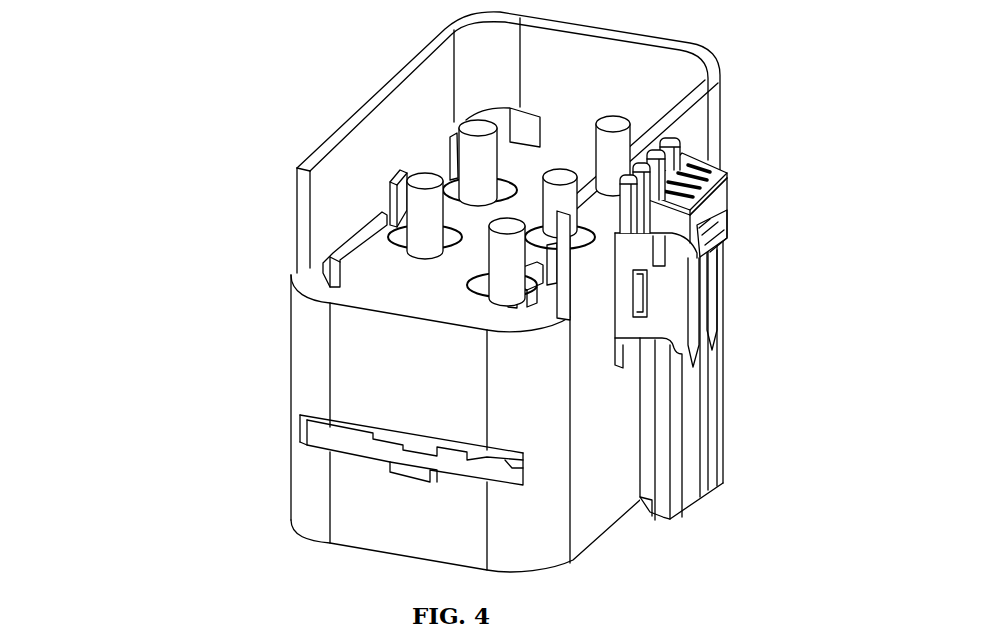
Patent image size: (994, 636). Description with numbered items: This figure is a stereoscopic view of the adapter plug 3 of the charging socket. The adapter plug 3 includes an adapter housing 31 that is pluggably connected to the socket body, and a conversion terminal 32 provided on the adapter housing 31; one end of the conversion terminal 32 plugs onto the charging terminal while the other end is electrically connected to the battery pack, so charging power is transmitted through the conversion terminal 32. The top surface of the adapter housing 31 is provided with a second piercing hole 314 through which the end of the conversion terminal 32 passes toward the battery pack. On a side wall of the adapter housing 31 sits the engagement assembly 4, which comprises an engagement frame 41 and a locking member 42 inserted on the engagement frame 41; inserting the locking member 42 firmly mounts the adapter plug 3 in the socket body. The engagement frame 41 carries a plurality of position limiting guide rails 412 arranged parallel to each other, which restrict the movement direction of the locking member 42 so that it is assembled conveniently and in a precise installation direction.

The adapter plug 3 is at (270, 329).
The adapter housing 31 is at (315, 471).
The conversion terminal 32 is at (473, 158).
The second piercing hole 314 is at (400, 243).
The engagement assembly 4 is at (749, 330).
The engagement frame 41 is at (645, 259).
The locking member 42 is at (713, 207).
The position limiting guide rails 412 is at (668, 158).